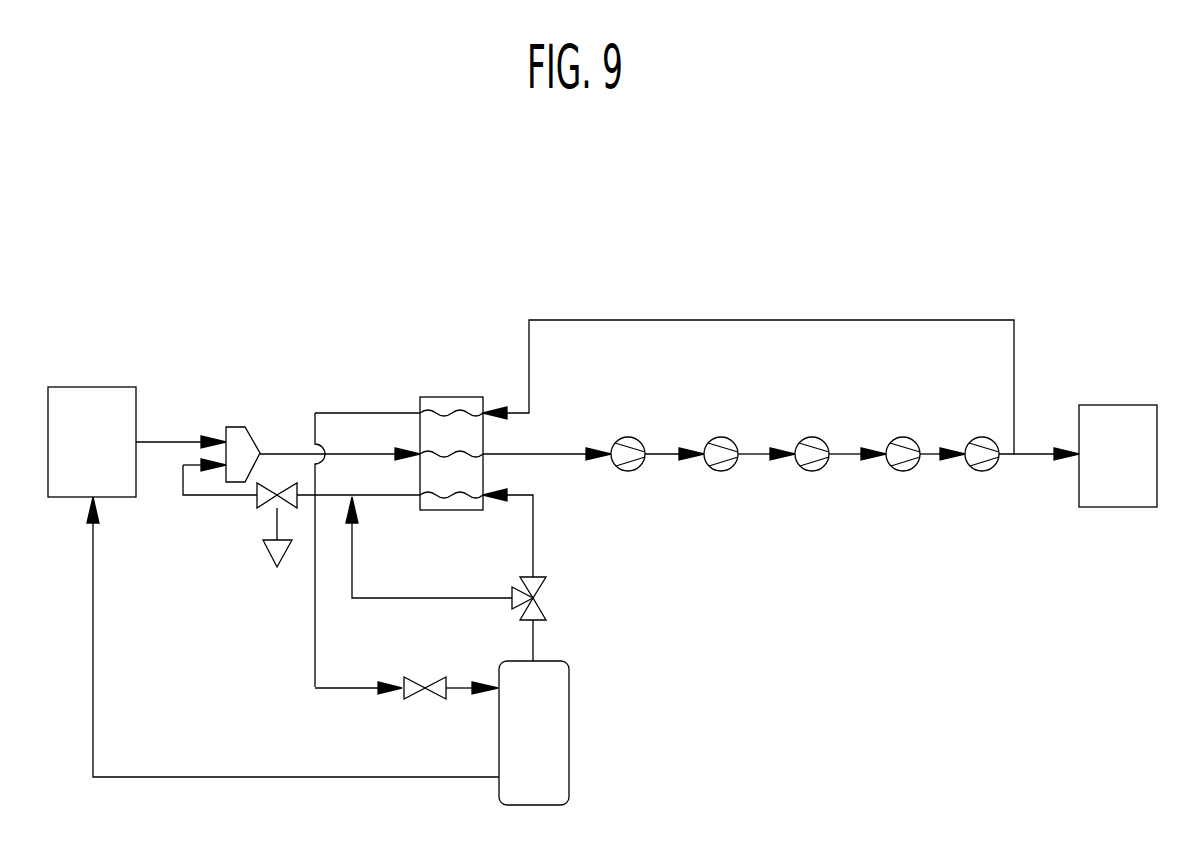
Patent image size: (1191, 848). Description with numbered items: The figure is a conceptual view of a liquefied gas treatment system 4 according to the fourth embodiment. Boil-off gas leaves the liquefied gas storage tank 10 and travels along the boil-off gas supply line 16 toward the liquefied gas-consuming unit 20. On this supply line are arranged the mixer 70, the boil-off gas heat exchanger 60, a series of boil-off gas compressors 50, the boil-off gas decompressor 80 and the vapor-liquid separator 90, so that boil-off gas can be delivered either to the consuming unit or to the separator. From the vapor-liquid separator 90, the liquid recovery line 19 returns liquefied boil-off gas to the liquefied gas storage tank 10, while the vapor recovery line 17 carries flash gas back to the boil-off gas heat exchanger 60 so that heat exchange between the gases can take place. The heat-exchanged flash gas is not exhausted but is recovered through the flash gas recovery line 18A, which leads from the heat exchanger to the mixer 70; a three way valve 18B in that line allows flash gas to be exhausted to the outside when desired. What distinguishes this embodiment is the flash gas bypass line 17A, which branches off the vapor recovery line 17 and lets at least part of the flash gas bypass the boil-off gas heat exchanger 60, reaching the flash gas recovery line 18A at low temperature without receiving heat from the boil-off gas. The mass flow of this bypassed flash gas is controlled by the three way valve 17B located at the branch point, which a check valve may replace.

The liquefied gas treatment system 4 is at (178, 218).
The liquefied gas storage tank 10 is at (82, 387).
The boil-off gas supply line 16 is at (287, 450).
The vapor recovery line 17 is at (533, 545).
The flash gas bypass line 17A is at (461, 598).
The three way valve 17B is at (547, 590).
The flash gas recovery line 18A is at (397, 497).
The three way valve 18B is at (262, 508).
The liquid recovery line 19 is at (283, 777).
The liquefied gas-consuming unit 20 is at (1125, 405).
The boil-off gas compressor 50 is at (641, 441).
The boil-off gas heat exchanger 60 is at (450, 397).
The mixer 70 is at (237, 427).
The boil-off gas decompressor 80 is at (413, 699).
The vapor-liquid separator 90 is at (569, 722).